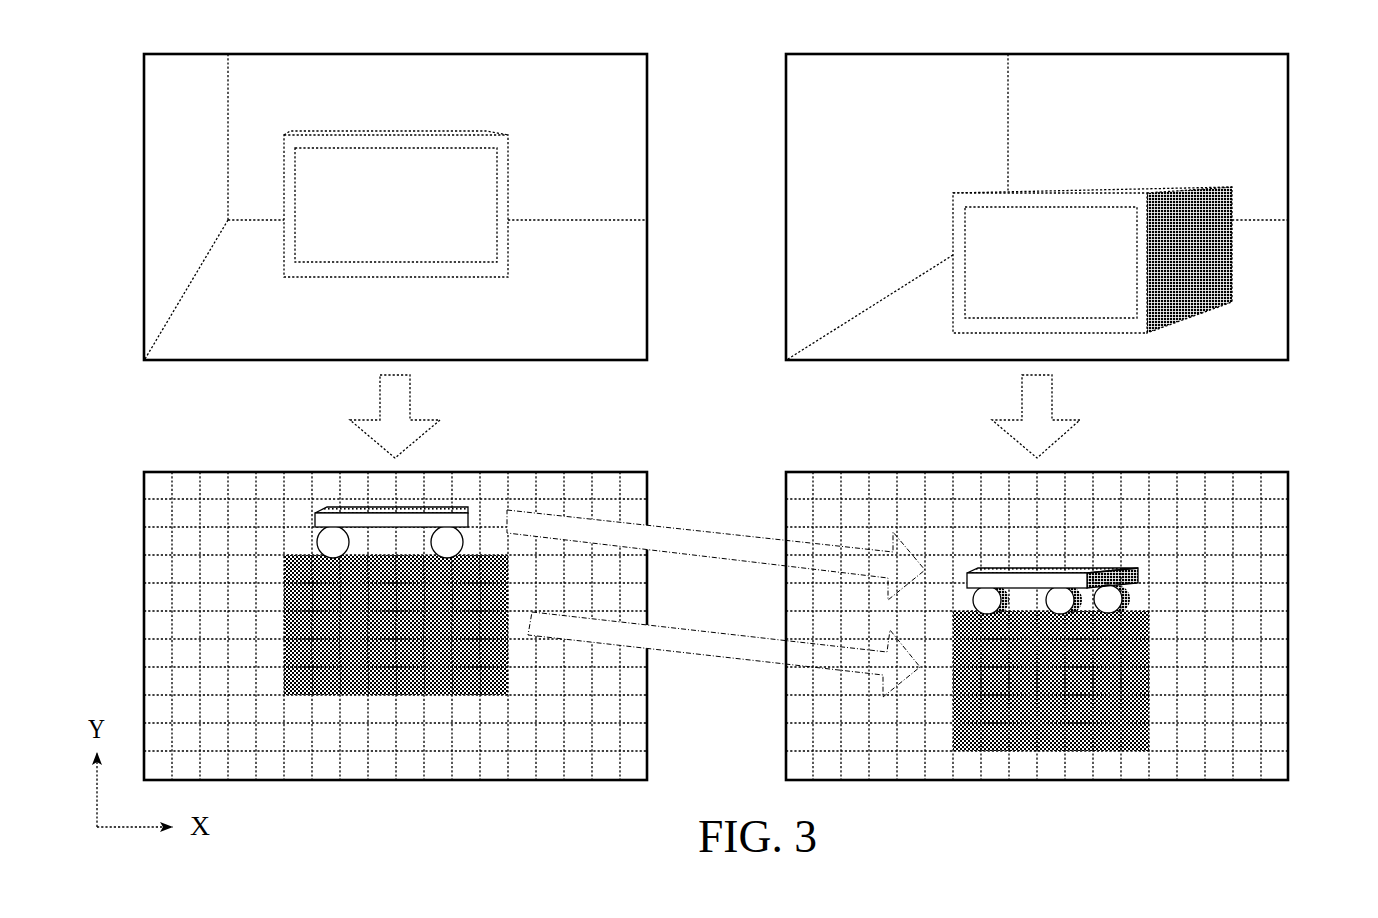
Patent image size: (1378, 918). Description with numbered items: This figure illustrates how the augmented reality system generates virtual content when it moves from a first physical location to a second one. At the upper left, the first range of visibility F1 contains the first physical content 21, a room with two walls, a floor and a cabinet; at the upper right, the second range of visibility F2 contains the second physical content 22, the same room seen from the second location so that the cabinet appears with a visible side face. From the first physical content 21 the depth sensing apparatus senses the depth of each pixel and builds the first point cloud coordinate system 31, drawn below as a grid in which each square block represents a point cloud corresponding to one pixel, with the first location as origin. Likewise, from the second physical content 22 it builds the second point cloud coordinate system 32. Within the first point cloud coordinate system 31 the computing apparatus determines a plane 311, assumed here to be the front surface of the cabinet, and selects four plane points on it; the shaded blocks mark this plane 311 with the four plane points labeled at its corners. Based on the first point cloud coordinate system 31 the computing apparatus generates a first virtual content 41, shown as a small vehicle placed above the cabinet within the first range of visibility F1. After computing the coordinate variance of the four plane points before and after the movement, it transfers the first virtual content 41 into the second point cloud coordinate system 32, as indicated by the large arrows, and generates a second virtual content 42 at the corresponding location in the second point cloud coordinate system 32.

The first physical content 21 is at (624, 345).
The second physical content 22 is at (1268, 345).
The first point cloud coordinate system 31 is at (600, 452).
The second point cloud coordinate system 32 is at (1236, 457).
The first virtual content 41 is at (285, 522).
The second virtual content 42 is at (1177, 586).
The plane 311 is at (284, 252).
The first range of visibility F1 is at (424, 207).
The second range of visibility F2 is at (1066, 207).